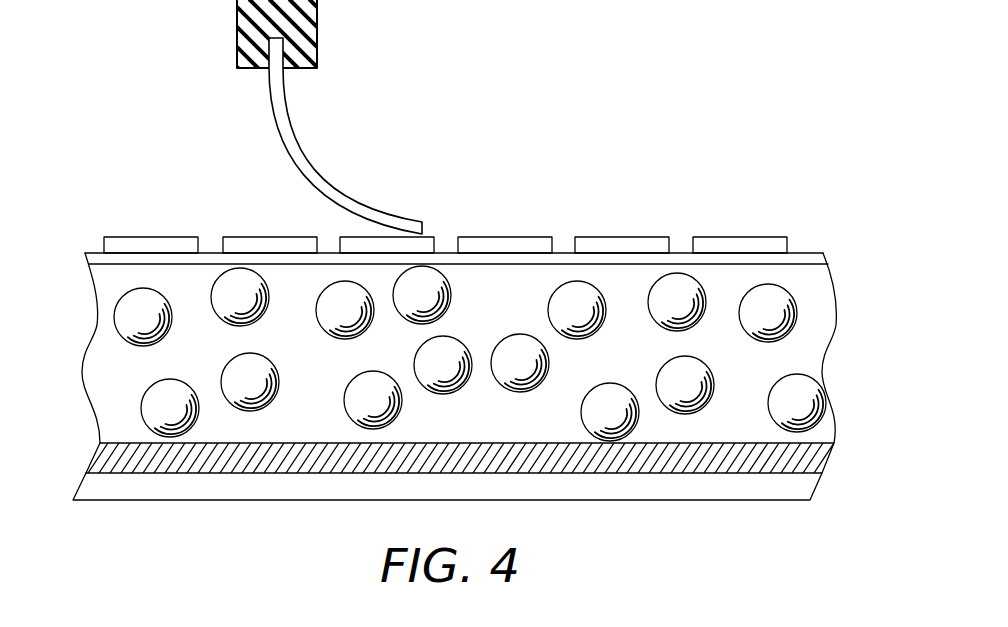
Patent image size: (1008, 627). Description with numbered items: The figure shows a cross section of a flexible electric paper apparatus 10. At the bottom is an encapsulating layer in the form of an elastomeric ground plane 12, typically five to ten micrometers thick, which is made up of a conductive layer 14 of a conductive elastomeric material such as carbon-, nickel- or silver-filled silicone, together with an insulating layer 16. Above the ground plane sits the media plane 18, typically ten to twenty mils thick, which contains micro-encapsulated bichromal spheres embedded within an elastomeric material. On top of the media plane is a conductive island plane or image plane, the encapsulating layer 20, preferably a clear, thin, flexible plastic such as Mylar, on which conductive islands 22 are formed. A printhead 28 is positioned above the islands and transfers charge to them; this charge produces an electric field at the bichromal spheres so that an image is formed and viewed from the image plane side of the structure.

The flexible electric paper apparatus 10 is at (672, 156).
The elastomeric ground plane 12 is at (847, 441).
The conductive layer 14 is at (97, 463).
The insulating layer 16 is at (87, 492).
The media plane 18 is at (83, 347).
The encapsulating layer 20 is at (87, 259).
The conductive islands 22 is at (258, 238).
The printhead 28 is at (290, 162).